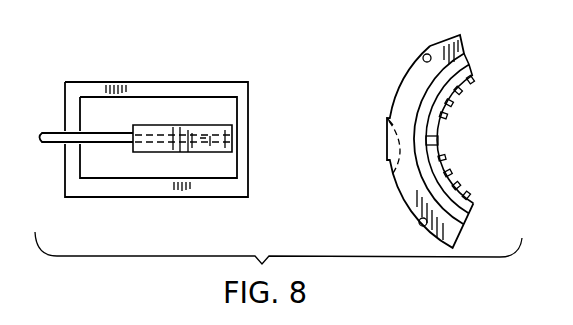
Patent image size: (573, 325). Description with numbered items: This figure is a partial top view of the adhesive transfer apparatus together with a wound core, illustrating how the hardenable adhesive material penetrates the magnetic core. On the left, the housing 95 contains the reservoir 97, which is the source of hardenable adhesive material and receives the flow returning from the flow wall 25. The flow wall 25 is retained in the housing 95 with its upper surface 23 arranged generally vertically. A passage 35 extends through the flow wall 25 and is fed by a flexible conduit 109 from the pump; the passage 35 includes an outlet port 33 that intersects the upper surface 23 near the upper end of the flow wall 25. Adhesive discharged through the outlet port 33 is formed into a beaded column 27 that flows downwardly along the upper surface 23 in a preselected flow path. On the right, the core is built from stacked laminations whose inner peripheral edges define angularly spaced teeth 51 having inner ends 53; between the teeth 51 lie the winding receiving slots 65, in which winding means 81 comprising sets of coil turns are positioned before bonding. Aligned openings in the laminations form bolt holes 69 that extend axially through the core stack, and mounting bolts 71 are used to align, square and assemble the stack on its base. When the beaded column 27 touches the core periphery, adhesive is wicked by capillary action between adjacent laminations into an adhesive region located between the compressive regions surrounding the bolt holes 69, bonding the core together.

The upper surface 23 is at (233, 144).
The flow wall 25 is at (208, 122).
The beaded column 27 is at (233, 138).
The outlet port 33 is at (233, 131).
The passage 35 is at (166, 148).
The teeth 51 is at (458, 92).
The inner ends 53 is at (468, 197).
The winding receiving slots 65 is at (450, 110).
The bolt holes 69 is at (419, 222).
The mounting bolts 71 is at (393, 173).
The winding means 81 is at (418, 100).
The housing 95 is at (74, 199).
The reservoir 97 is at (194, 186).
The flexible conduit 109 is at (47, 135).